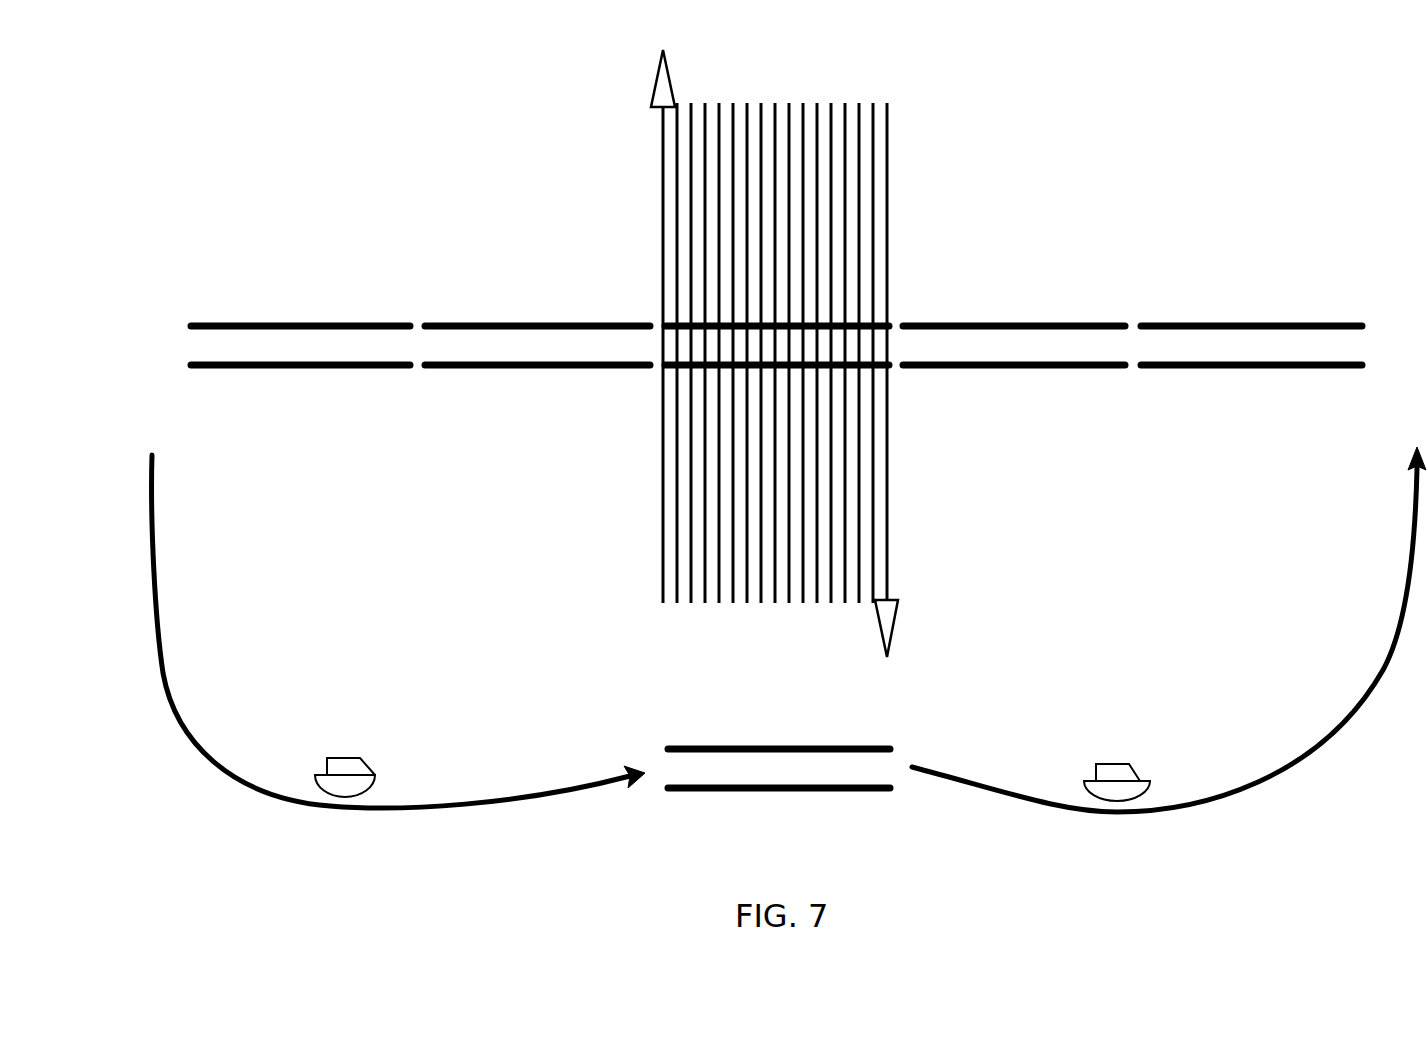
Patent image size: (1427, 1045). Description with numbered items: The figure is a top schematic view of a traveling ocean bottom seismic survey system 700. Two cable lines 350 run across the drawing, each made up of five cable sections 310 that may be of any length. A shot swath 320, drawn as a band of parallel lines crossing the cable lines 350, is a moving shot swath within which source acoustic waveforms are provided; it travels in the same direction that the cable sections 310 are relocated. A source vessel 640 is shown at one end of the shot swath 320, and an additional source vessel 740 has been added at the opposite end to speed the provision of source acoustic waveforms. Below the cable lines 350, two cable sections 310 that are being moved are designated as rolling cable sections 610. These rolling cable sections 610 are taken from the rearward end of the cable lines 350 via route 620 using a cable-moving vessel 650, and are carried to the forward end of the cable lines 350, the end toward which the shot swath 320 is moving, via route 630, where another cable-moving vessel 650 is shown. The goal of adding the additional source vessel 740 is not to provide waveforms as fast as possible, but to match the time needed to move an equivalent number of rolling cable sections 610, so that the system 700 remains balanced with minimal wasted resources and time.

The cable sections 310 is at (288, 322).
The shot swath 320 is at (664, 196).
The cable lines 350 is at (189, 365).
The rolling cable sections 610 is at (890, 745).
The route 620 is at (252, 790).
The route 630 is at (1034, 800).
The source vessel 640 is at (653, 96).
The cable-moving vessel 650 is at (378, 778).
The traveling ocean bottom seismic survey system 700 is at (1229, 866).
The additional source vessel 740 is at (895, 625).